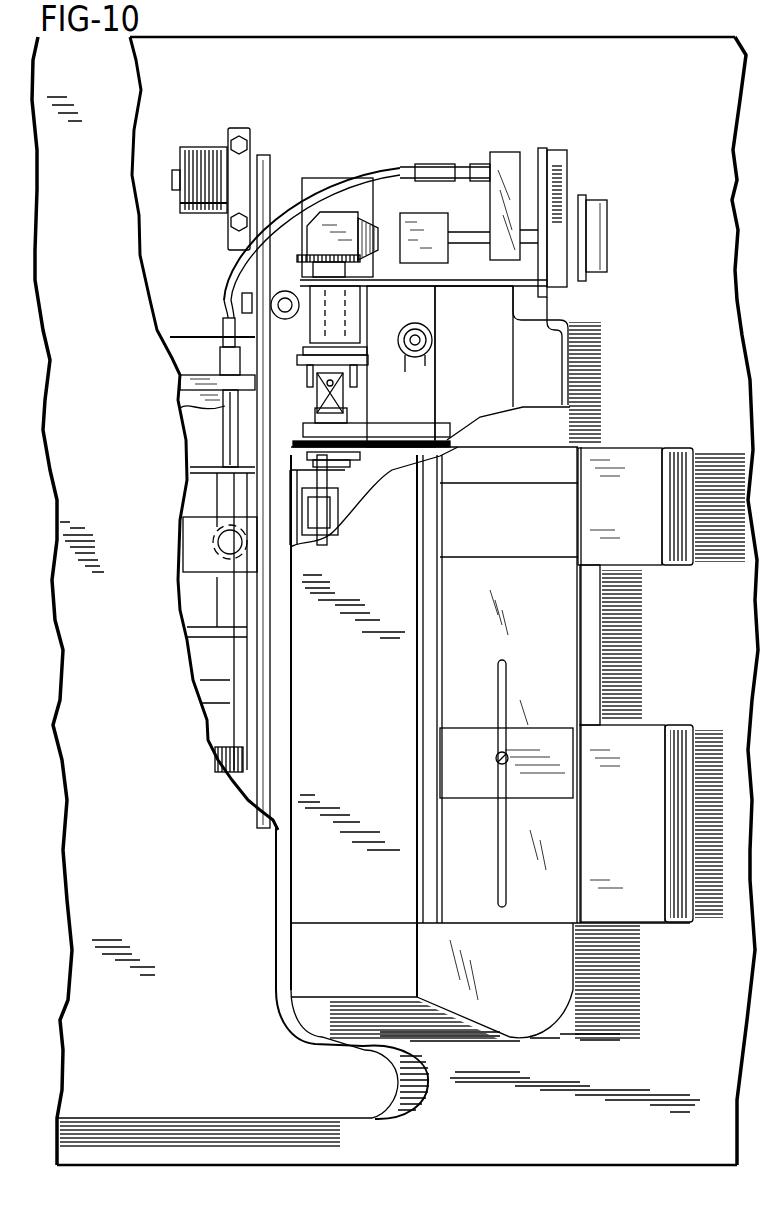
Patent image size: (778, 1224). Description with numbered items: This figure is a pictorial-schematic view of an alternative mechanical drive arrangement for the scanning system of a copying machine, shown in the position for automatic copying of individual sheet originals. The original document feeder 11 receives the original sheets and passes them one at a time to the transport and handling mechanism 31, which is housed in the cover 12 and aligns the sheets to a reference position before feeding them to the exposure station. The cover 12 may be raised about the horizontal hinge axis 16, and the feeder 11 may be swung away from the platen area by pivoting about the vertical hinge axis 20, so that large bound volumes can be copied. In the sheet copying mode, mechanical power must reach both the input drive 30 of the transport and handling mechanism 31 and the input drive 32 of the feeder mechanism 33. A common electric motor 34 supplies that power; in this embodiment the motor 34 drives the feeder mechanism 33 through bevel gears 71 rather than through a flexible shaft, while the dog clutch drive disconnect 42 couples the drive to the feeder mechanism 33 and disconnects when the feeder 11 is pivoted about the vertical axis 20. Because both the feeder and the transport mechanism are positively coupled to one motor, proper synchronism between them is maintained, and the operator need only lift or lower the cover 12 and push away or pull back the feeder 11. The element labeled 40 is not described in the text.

The original document feeder 11 is at (700, 430).
The cover 12 is at (164, 813).
The horizontal hinge axis 16 is at (272, 172).
The vertical hinge axis 20 is at (432, 334).
The input drive 30 is at (180, 410).
The transport and handling mechanism 31 is at (218, 664).
The input drive 32 is at (360, 415).
The feeder mechanism 33 is at (290, 432).
The electric motor 34 is at (460, 200).
The cable 40 is at (353, 182).
The dog clutch drive disconnect 42 is at (307, 370).
The bevel gears 71 is at (300, 256).